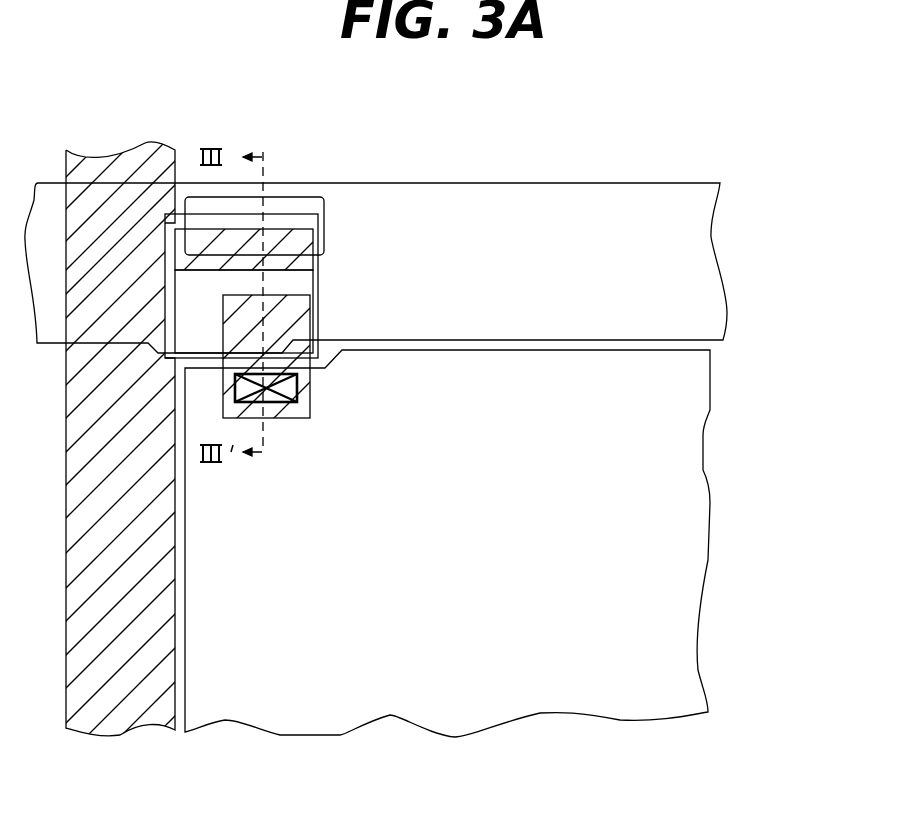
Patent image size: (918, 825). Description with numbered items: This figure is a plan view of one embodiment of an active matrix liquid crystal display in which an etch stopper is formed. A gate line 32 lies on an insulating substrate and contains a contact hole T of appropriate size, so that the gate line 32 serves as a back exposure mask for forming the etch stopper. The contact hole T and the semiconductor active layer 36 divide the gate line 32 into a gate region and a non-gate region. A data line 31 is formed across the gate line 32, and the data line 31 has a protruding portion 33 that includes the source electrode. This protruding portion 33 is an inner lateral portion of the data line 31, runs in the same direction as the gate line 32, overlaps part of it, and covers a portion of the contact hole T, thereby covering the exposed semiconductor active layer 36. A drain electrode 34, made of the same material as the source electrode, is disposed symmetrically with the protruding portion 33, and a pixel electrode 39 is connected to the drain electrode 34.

The data line 31 is at (137, 157).
The gate line 32 is at (693, 233).
The protruding portion 33 is at (247, 230).
The drain electrode 34 is at (305, 394).
The semiconductor active layer 36 is at (320, 275).
The pixel electrode 39 is at (683, 435).
The contact hole T is at (323, 197).